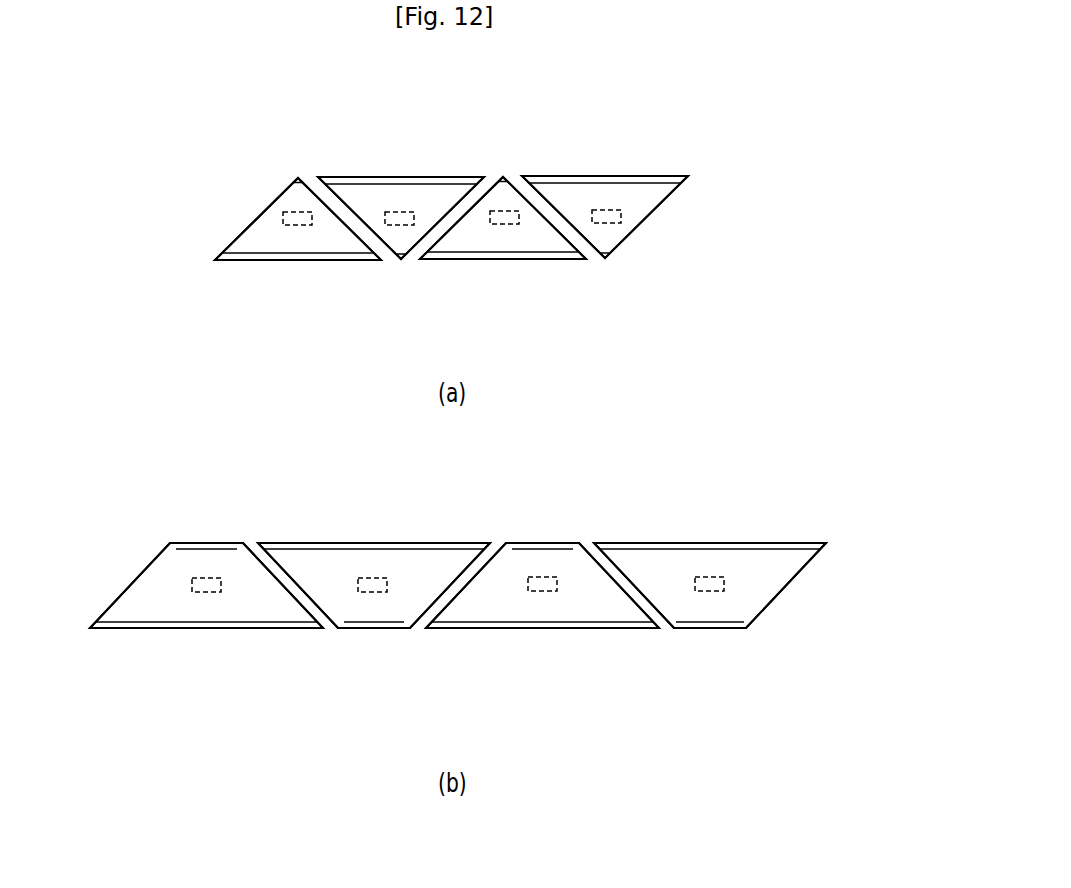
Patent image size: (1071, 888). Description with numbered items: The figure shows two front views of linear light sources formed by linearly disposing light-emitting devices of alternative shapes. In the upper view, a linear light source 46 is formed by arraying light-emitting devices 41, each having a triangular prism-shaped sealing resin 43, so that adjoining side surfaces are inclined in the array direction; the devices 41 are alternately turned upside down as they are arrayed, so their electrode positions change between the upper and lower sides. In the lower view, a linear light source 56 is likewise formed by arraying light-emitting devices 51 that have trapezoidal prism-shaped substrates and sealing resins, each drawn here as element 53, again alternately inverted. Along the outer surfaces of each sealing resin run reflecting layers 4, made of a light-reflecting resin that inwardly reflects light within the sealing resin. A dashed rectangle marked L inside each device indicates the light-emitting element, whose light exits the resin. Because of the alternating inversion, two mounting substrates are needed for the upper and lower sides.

The reflecting layer 4 is at (297, 178).
The light-emitting device 41 is at (404, 166).
The sealing resin 43 is at (262, 223).
The linear light source 46 is at (718, 134).
The light emitting element L is at (400, 209).
The light-emitting device 51 is at (373, 535).
The trapezoidal substrate 53 is at (155, 580).
The linear light source 56 is at (816, 490).